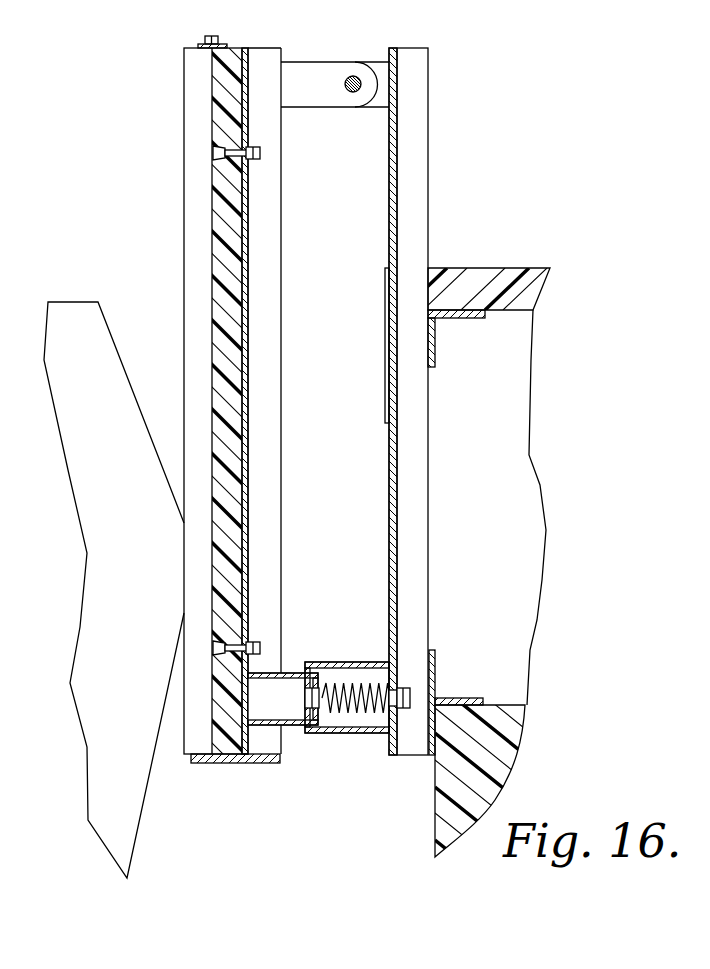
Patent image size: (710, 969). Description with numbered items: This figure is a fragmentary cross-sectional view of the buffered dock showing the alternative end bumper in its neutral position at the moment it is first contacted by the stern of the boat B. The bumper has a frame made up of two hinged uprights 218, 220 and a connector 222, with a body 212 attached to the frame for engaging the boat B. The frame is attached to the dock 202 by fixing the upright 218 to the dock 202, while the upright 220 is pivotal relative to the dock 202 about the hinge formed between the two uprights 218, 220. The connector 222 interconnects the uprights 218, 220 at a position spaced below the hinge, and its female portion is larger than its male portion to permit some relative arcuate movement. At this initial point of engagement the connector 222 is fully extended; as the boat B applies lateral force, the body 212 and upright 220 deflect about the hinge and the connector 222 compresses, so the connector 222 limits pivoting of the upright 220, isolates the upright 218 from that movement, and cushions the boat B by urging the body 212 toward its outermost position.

The boat B is at (70, 312).
The dock 202 is at (487, 276).
The body 212 is at (198, 122).
The hinged upright 218 is at (413, 89).
The hinged upright 220 is at (267, 58).
The connector 222 is at (355, 734).